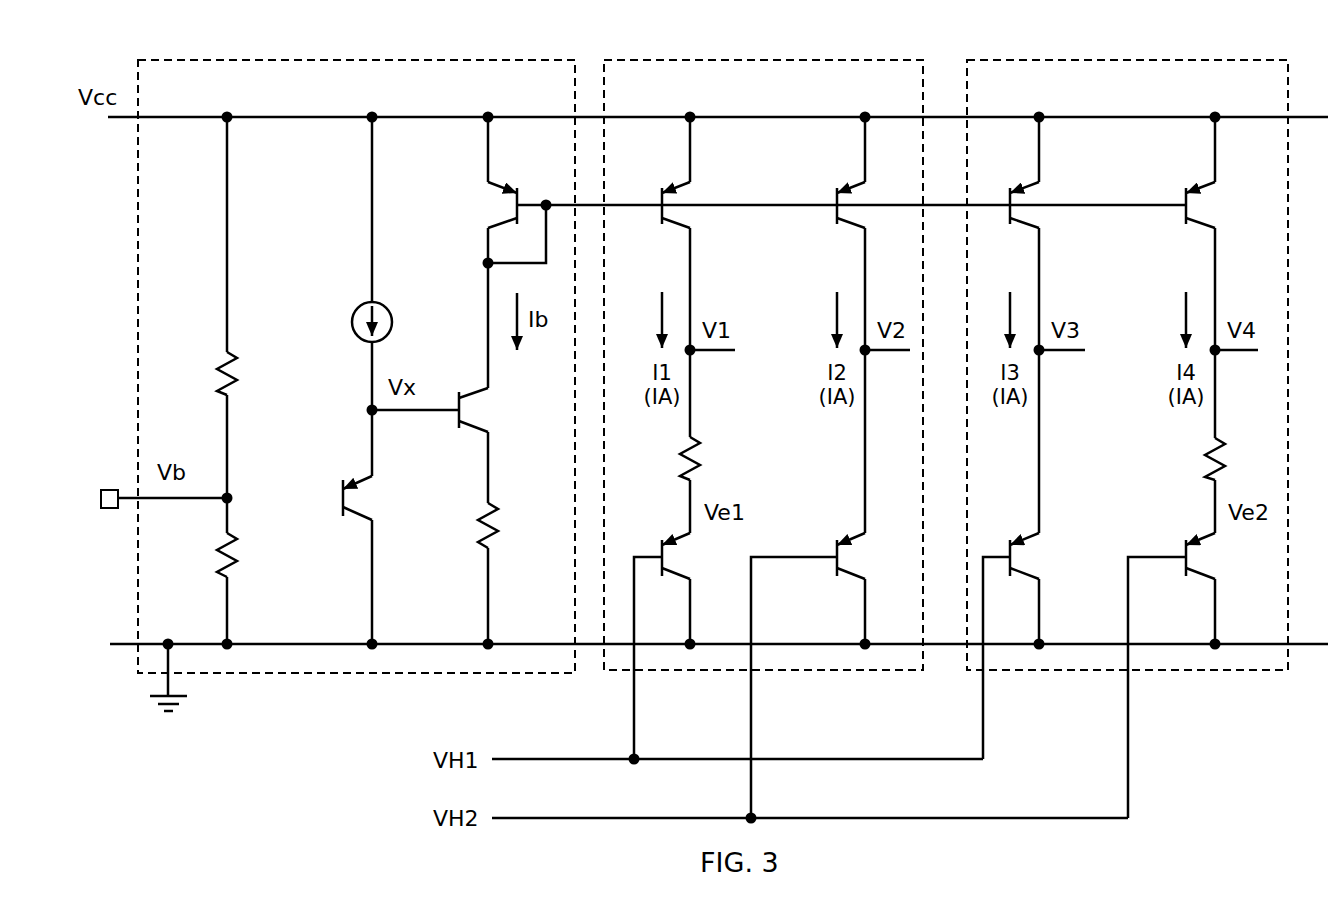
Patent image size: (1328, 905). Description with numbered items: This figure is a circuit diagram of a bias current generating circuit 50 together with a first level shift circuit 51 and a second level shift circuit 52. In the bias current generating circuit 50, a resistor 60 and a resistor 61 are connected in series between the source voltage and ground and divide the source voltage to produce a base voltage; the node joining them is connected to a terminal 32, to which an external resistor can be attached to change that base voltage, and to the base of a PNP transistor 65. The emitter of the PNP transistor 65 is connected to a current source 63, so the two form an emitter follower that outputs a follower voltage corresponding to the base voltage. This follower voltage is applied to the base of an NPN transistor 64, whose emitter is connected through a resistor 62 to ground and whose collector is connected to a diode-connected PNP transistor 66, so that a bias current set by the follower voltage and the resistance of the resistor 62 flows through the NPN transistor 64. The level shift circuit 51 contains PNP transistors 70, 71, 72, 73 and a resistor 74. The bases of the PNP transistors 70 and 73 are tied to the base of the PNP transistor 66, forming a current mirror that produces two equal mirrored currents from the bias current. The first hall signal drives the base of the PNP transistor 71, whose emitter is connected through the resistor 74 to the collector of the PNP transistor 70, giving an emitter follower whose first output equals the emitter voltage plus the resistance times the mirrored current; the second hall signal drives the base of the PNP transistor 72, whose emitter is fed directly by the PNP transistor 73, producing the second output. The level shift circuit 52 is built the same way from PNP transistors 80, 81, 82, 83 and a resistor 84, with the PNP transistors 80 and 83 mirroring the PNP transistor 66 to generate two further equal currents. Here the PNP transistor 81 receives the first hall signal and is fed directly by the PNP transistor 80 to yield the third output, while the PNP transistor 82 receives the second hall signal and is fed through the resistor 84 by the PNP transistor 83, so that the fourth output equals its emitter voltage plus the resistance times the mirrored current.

The terminal 32 is at (101, 490).
The bias current generating circuit 50 is at (175, 60).
The level shift circuit 51 is at (645, 60).
The level shift circuit 52 is at (1005, 60).
The resistor 60 is at (232, 351).
The resistor 61 is at (232, 533).
The resistor 62 is at (493, 512).
The current source 63 is at (385, 306).
The NPN transistor 64 is at (482, 430).
The PNP transistor 65 is at (345, 518).
The PNP transistor 66 is at (505, 190).
The PNP transistor 70 is at (668, 230).
The PNP transistor 71 is at (683, 575).
The PNP transistor 72 is at (858, 575).
The PNP transistor 73 is at (843, 230).
The resistor 74 is at (695, 438).
The PNP transistor 80 is at (1016, 230).
The PNP transistor 81 is at (1031, 575).
The PNP transistor 82 is at (1207, 575).
The PNP transistor 83 is at (1192, 230).
The resistor 84 is at (1224, 446).